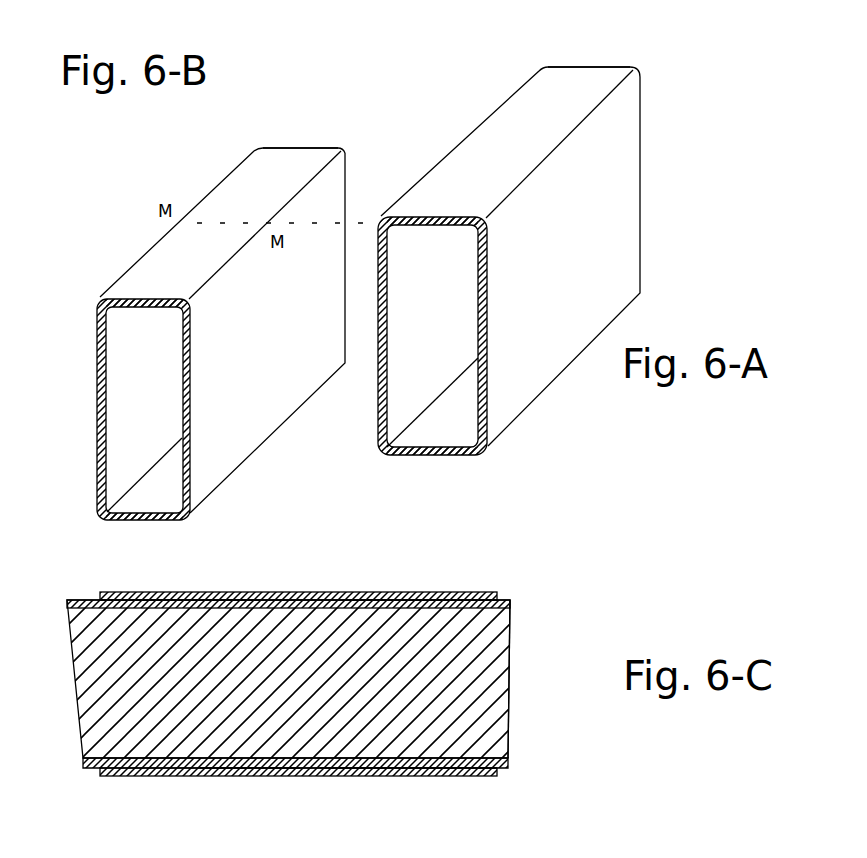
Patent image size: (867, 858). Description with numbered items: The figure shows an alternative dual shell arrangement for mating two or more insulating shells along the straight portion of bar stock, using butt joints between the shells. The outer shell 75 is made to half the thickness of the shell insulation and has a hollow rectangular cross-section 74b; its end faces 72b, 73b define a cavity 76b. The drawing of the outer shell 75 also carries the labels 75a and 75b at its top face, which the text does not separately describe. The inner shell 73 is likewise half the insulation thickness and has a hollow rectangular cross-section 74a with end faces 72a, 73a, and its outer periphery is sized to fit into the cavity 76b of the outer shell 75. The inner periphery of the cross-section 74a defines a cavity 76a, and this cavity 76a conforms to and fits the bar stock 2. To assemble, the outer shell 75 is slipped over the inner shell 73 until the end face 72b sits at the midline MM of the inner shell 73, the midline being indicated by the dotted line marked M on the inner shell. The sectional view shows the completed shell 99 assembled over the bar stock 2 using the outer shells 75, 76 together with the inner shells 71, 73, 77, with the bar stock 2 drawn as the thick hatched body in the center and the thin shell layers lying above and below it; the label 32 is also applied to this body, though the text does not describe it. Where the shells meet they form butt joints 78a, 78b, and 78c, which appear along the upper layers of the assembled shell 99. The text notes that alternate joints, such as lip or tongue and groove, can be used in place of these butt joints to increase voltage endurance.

In FIG. 6-B, the inner shell 73 is at (232, 170).
In FIG. 6-C, the inner shell 73 is at (247, 768).
In FIG. 6-B, the end face of inner shell 73a is at (348, 165).
In FIG. 6-A, the end face of outer shell 73b is at (642, 90).
In FIG. 6-A, the outer shell 75 is at (517, 90).
In FIG. 6-C, the outer shell 75 is at (357, 776).
In FIG. 6-B, the top face of first tube 75a is at (276, 148).
In FIG. 6-A, the top face of second tube 75b is at (580, 67).
In FIG. 6-B, the hollow rectangular cross-section of inner shell 74a is at (124, 299).
In FIG. 6-A, the hollow rectangular cross-section of outer shell 74b is at (425, 217).
In FIG. 6-B, the cavity of inner shell 76a is at (126, 398).
In FIG. 6-A, the cavity of outer shell 76b is at (422, 382).
In FIG. 6-B, the end face of inner shell 72a is at (183, 387).
In FIG. 6-A, the end face of outer shell 72b is at (480, 308).
In FIG. 6-C, the body member 32 is at (66, 677).
In FIG. 6-C, the bar stock 2 is at (510, 697).
In FIG. 6-C, the shell 99 is at (536, 619).
In FIG. 6-C, the butt joint 78a is at (210, 600).
In FIG. 6-C, the butt joint 78b is at (413, 600).
In FIG. 6-C, the butt joint 78c is at (322, 592).
In FIG. 6-C, the inner shell 71 is at (145, 765).
In FIG. 6-C, the outer shell 76 is at (168, 777).
In FIG. 6-C, the inner shell 77 is at (425, 776).